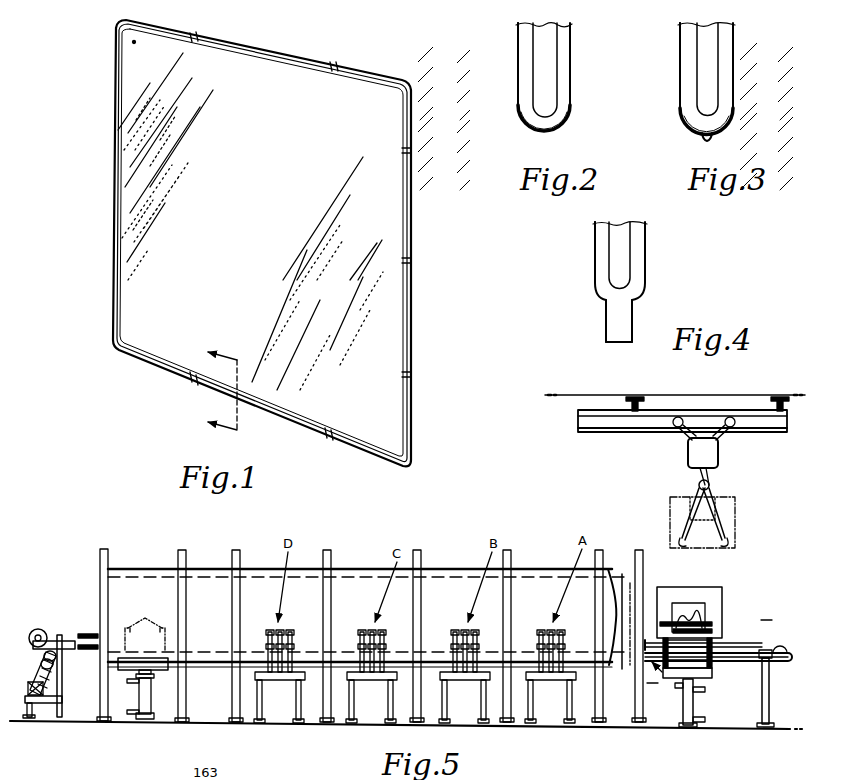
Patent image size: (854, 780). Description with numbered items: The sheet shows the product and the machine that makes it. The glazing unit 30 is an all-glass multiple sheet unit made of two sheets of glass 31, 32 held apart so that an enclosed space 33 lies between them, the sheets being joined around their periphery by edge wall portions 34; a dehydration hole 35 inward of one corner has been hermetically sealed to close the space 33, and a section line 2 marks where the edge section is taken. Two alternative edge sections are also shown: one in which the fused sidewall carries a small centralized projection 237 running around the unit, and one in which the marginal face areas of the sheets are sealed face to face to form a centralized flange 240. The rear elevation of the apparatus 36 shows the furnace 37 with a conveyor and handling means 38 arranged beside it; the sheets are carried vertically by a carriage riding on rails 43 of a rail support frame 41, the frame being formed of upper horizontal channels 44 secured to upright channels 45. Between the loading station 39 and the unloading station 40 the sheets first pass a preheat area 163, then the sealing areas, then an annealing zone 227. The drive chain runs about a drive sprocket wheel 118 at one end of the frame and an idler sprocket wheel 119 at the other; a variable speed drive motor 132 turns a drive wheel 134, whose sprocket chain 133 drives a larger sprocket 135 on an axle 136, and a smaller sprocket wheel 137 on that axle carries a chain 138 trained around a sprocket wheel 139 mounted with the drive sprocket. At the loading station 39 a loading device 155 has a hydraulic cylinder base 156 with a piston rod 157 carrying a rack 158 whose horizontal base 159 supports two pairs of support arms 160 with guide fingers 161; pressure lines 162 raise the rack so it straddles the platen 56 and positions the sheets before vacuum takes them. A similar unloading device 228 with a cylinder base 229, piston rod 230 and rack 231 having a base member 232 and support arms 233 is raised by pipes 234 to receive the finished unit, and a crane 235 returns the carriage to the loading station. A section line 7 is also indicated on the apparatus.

In FIG. 1, the glazing unit 30 is at (318, 100).
In FIG. 1, the dehydration hole 35 is at (132, 44).
In FIG. 1, the section line 2 is at (214, 387).
In FIG. 2, the sheet of glass 31 is at (560, 66).
In FIG. 3, the sheet of glass 31 is at (730, 80).
In FIG. 4, the sheet of glass 31 is at (642, 255).
In FIG. 2, the sheet of glass 32 is at (521, 76).
In FIG. 3, the sheet of glass 32 is at (688, 80).
In FIG. 4, the sheet of glass 32 is at (598, 257).
In FIG. 2, the enclosed space 33 is at (545, 53).
In FIG. 3, the enclosed space 33 is at (710, 56).
In FIG. 4, the enclosed space 33 is at (620, 238).
In FIG. 2, the edge wall portion 34 is at (565, 113).
In FIG. 3, the edge wall portion 34 is at (690, 125).
In FIG. 3, the projection 237 is at (713, 137).
In FIG. 4, the centralized flange 240 is at (615, 320).
In FIG. 5, the crane 235 is at (697, 455).
In FIG. 5, the furnace 37 is at (362, 568).
In FIG. 5, the apparatus 36 is at (452, 568).
In FIG. 5, the preheat area 163 is at (617, 572).
In FIG. 5, the unloading station 40 is at (140, 600).
In FIG. 5, the annealing zone 227 is at (211, 566).
In FIG. 5, the support arms 233 is at (145, 633).
In FIG. 5, the base member 232 is at (160, 661).
In FIG. 5, the rack 231 is at (168, 667).
In FIG. 5, the piston rod 230 is at (154, 675).
In FIG. 5, the unloading device 228 is at (158, 694).
In FIG. 5, the pipes 234 is at (128, 684).
In FIG. 5, the cylinder base 229 is at (147, 708).
In FIG. 5, the sprocket wheel 139 is at (60, 640).
In FIG. 5, the drive sprocket wheel 118 is at (60, 640).
In FIG. 5, the chain 138 is at (58, 645).
In FIG. 5, the sprocket chain 133 is at (61, 716).
In FIG. 5, the sprocket 135 is at (43, 686).
In FIG. 5, the axle 136 is at (50, 670).
In FIG. 5, the sprocket wheel 137 is at (56, 658).
In FIG. 5, the drive wheel 134 is at (42, 705).
In FIG. 5, the variable speed drive motor 132 is at (30, 716).
In FIG. 5, the conveyor and handling means 38 is at (680, 593).
In FIG. 5, the platen 56 is at (689, 610).
In FIG. 5, the loading station 39 is at (757, 602).
In FIG. 5, the section line 7 is at (709, 645).
In FIG. 5, the guide fingers 161 is at (712, 633).
In FIG. 5, the support arms 160 is at (700, 660).
In FIG. 5, the rack 158 is at (699, 678).
In FIG. 5, the horizontal base 159 is at (706, 690).
In FIG. 5, the loading device 155 is at (707, 700).
In FIG. 5, the piston rod 157 is at (679, 687).
In FIG. 5, the hydraulic cylinder base 156 is at (688, 712).
In FIG. 5, the pressure lines 162 is at (704, 693).
In FIG. 5, the rails 43 is at (756, 643).
In FIG. 5, the horizontal channels 44 is at (723, 670).
In FIG. 5, the rail support frame 41 is at (770, 696).
In FIG. 5, the idler sprocket wheel 119 is at (783, 651).
In FIG. 5, the upright channels 45 is at (770, 711).